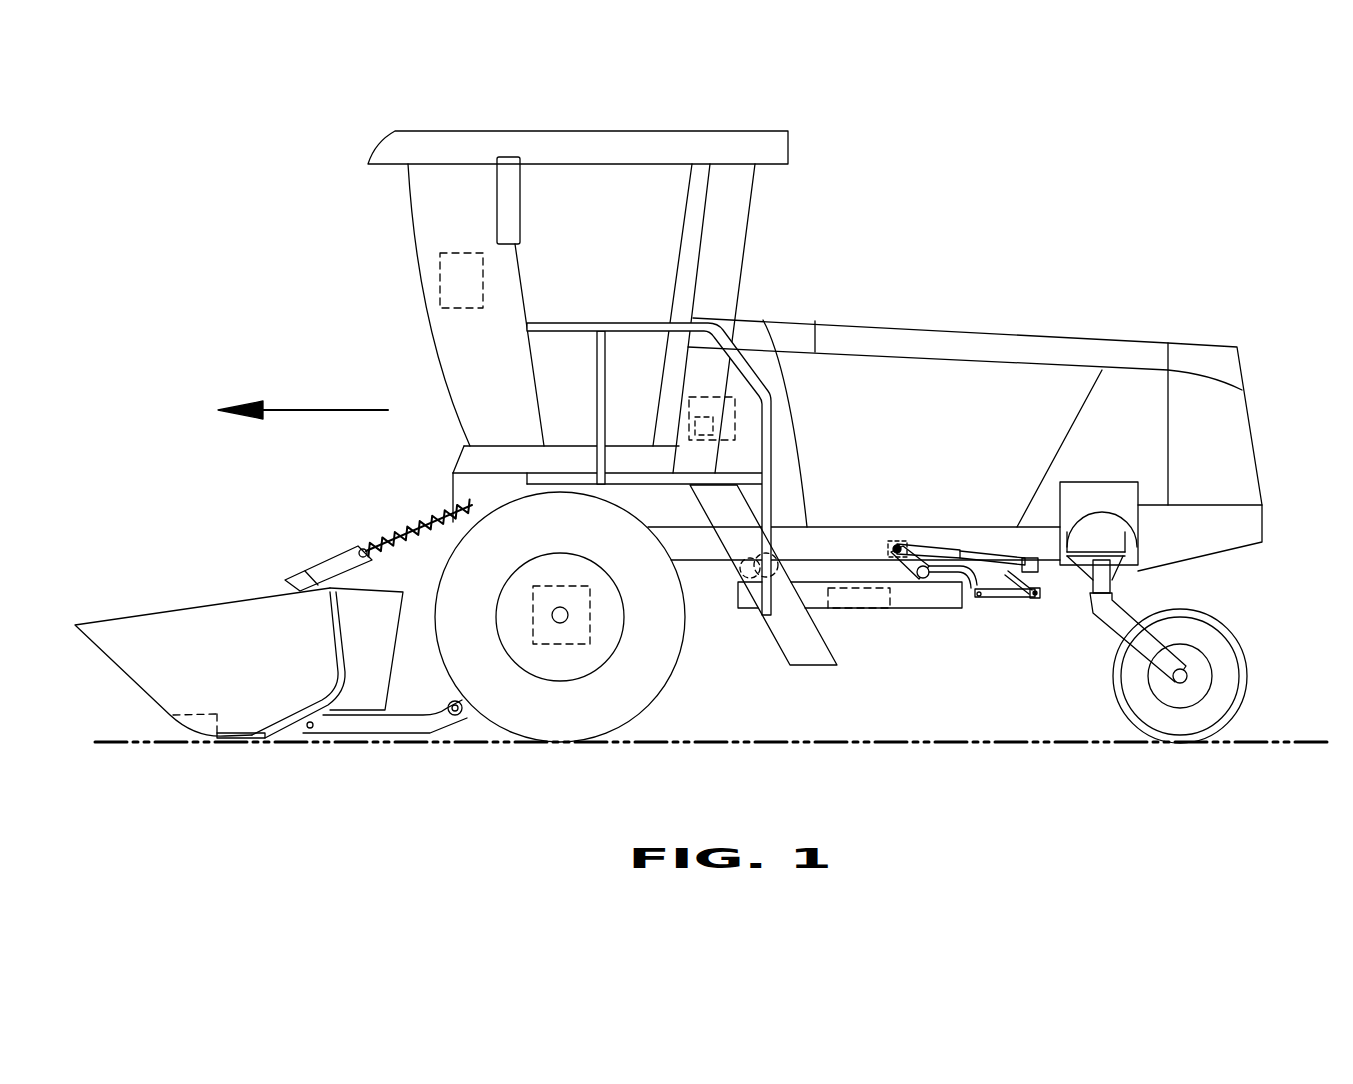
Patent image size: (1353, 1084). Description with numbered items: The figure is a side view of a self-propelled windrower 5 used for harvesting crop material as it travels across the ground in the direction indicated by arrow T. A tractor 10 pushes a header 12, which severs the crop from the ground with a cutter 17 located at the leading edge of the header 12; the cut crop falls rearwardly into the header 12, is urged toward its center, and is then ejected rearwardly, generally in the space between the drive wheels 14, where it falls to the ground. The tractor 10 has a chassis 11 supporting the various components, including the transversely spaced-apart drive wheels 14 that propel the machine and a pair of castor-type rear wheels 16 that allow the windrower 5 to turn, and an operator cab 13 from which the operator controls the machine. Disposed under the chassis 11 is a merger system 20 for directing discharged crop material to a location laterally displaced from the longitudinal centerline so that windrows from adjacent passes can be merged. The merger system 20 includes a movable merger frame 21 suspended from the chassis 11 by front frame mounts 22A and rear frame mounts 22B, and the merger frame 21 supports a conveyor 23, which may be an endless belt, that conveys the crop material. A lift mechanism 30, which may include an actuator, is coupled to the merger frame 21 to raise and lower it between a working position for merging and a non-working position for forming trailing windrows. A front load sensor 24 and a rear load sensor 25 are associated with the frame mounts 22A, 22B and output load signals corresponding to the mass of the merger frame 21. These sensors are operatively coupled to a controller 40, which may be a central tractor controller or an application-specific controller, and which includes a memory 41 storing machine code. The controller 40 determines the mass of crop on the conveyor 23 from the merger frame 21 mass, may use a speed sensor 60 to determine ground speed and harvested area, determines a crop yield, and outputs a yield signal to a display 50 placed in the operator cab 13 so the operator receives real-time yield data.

The self-propelled windrower 5 is at (237, 311).
The direction of travel T is at (302, 410).
The tractor 10 is at (941, 401).
The chassis 11 is at (955, 540).
The header 12 is at (273, 612).
The operator cab 13 is at (614, 373).
The drive wheels 14 is at (560, 644).
The rear wheels 16 is at (1228, 637).
The cutter 17 is at (220, 712).
The merger system 20 is at (864, 635).
The merger frame 21 is at (855, 608).
The front frame mounts 22A is at (740, 572).
The rear frame mounts 22B is at (916, 580).
The conveyor 23 is at (897, 592).
The front load sensor 24 is at (758, 552).
The rear load sensor 25 is at (897, 541).
The lift mechanism 30 is at (1016, 635).
The controller 40 is at (735, 413).
The memory 41 is at (695, 428).
The display 50 is at (440, 283).
The speed sensor 60 is at (592, 610).